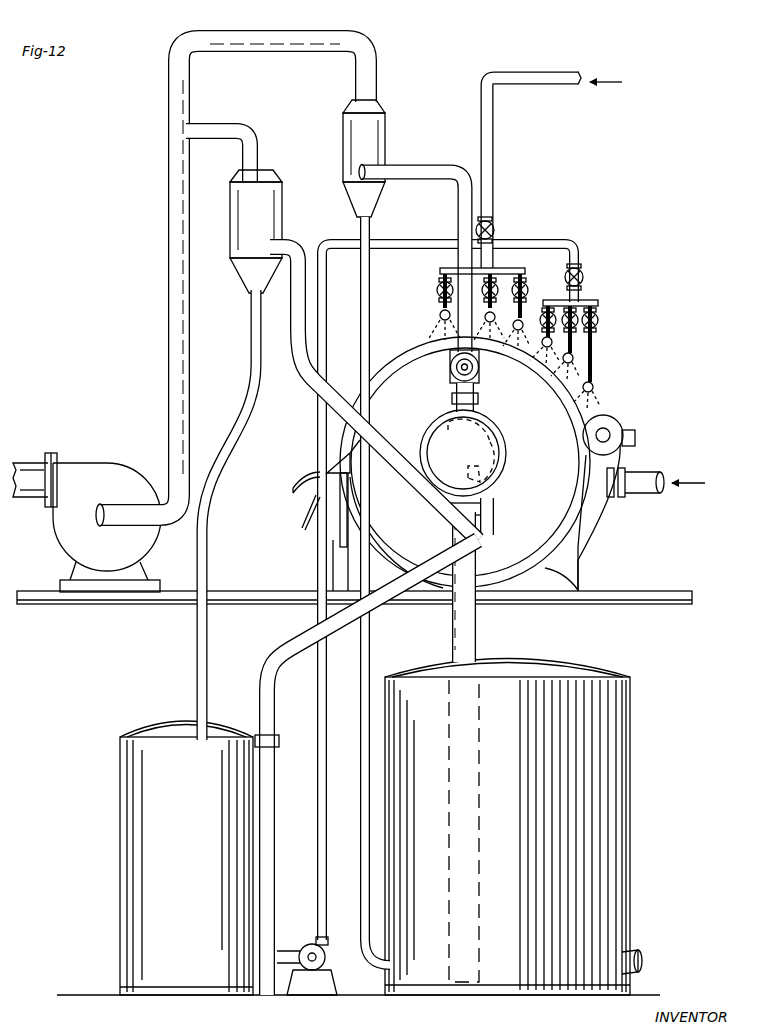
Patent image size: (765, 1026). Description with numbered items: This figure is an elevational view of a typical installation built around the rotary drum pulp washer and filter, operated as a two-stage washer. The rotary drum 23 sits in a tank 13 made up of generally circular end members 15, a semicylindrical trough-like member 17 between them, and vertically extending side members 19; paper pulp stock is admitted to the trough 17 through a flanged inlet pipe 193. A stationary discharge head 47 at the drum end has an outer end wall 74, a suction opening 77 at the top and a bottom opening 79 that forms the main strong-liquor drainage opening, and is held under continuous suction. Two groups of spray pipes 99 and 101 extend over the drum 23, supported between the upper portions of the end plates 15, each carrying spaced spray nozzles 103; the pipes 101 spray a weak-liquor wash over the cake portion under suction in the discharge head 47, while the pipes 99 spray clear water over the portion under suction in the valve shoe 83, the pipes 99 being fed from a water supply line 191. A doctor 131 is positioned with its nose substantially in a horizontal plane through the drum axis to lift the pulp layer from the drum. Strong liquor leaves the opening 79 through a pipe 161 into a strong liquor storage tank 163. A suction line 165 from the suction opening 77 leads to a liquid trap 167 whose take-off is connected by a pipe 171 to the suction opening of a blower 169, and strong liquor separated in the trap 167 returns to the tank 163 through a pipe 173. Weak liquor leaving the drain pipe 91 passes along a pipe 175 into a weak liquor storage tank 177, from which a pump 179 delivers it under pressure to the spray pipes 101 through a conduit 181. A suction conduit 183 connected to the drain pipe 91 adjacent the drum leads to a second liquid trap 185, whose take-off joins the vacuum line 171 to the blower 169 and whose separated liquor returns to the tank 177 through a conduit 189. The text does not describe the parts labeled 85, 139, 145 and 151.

The tank 13 is at (601, 531).
The end members 15 is at (605, 505).
The trough-like member 17 is at (566, 577).
The side members 19 is at (580, 560).
The drum 23 is at (437, 358).
The discharge head 47 is at (508, 437).
The outer end wall 74 is at (433, 447).
The suction opening 77 is at (479, 398).
The bottom opening 79 is at (484, 508).
The valve shoe 83 is at (471, 428).
The inner drum outlet 85 is at (501, 470).
The weak liquor drain pipe 91 is at (495, 526).
The spray pipes 99 is at (441, 301).
The spray pipes 101 is at (593, 384).
The spray nozzles 103 is at (440, 315).
The doctor 131 is at (330, 458).
The blade holder 139 is at (338, 537).
The wiper 145 is at (303, 520).
The trunnion ring 151 is at (618, 424).
The pipe 161 is at (477, 627).
The strong liquor storage tank 163 is at (613, 704).
The suction line 165 is at (457, 214).
The separator or liquid trap 167 is at (385, 151).
The blower 169 is at (118, 483).
The pipe 171 is at (167, 327).
The pipe 173 is at (372, 308).
The pipe 175 is at (337, 634).
The weak liquor storage tank 177 is at (133, 760).
The pump 179 is at (310, 945).
The conduit 181 is at (577, 249).
The suction conduit 183 is at (309, 383).
The separator or liquid trap 185 is at (283, 212).
The conduit 189 is at (229, 455).
The water supply line 191 is at (531, 88).
The flanged inlet pipe 193 is at (648, 470).